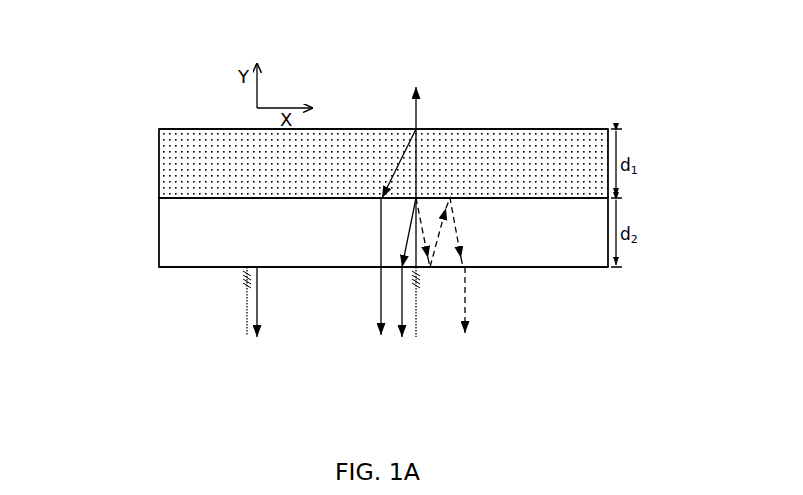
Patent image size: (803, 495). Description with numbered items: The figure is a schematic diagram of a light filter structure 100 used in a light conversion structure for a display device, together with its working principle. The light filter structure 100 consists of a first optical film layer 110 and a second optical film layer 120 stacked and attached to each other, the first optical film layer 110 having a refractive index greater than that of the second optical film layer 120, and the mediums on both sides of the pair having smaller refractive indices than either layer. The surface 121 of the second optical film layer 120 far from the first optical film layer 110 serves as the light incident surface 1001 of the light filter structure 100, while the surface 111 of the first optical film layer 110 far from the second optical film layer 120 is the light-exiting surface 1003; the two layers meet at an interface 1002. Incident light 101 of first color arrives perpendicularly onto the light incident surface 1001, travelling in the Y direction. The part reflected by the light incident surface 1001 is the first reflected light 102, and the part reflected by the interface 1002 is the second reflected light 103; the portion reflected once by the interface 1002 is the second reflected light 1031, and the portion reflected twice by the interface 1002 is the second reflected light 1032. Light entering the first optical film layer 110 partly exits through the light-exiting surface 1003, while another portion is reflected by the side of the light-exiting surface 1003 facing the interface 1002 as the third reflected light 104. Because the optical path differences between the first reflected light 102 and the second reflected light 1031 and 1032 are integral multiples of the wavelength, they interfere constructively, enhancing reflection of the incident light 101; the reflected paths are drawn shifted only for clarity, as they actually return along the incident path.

The light filter structure 100 is at (383, 169).
The first optical film layer 110 is at (570, 157).
The second optical film layer 120 is at (565, 245).
The light-exiting surface 1003 is at (330, 115).
The surface of the first optical film layer far away from the second optical film la 111 is at (200, 128).
The interface 1002 is at (188, 199).
The light incident surface 1001 is at (330, 285).
The surface of the second optical film layer far away from the first optical film la 121 is at (190, 268).
The incident light of first color 101 is at (247, 335).
The first reflected light 102 is at (257, 337).
The third reflected light 104 is at (380, 335).
The second reflected light 1031 is at (473, 302).
The second reflected light 1032 is at (469, 330).
The second reflected light 103 is at (402, 337).